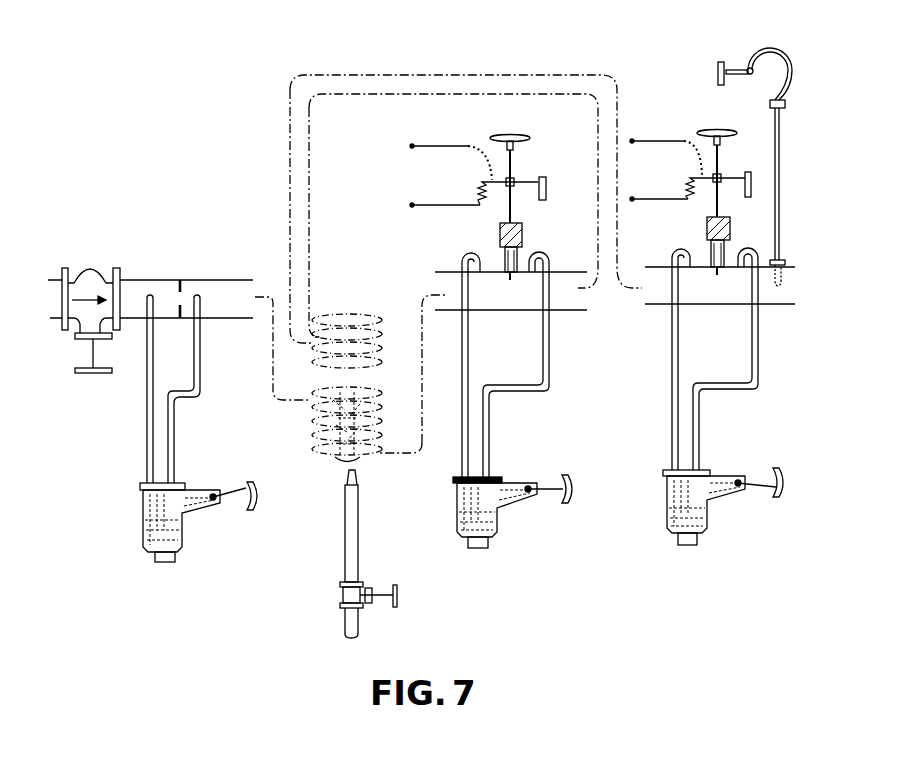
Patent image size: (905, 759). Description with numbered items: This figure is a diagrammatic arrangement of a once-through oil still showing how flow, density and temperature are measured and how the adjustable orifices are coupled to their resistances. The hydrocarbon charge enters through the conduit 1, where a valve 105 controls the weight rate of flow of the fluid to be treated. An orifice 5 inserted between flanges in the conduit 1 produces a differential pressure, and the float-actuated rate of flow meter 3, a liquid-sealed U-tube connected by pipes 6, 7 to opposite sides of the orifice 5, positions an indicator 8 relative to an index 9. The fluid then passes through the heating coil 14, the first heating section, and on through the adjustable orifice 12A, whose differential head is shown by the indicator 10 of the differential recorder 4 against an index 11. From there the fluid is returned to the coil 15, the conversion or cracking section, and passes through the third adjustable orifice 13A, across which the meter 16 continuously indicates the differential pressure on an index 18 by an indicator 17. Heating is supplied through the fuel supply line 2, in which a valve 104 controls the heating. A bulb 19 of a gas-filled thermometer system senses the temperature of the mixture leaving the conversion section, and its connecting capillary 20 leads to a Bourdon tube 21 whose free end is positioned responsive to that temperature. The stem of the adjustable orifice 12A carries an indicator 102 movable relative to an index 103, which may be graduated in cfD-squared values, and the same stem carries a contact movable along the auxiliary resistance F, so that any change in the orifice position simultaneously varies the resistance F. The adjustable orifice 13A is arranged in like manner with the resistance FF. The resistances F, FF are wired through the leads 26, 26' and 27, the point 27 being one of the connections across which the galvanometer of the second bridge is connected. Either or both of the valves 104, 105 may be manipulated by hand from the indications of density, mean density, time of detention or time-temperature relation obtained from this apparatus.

The conduit 1 is at (237, 318).
The fuel supply line 2 is at (358, 541).
The rate of flow meter 3 is at (143, 520).
The differential recorder 4 is at (458, 505).
The orifice 5 is at (178, 314).
The pipe 6 is at (147, 440).
The pipe 7 is at (174, 440).
The indicator 8 is at (238, 490).
The index 9 is at (258, 498).
The indicator 10 is at (548, 487).
The index 11 is at (579, 492).
The adjustable orifice 12A is at (510, 278).
The adjustable orifice 13A is at (717, 274).
The heating coil 14 is at (364, 424).
The coil 15 is at (364, 341).
The meter 16 is at (668, 506).
The indicator 17 is at (757, 480).
The index 18 is at (783, 487).
The bulb 19 is at (728, 285).
The connecting capillary 20 is at (779, 175).
The Bourdon tube 21 is at (769, 52).
The lead wire 26 is at (445, 216).
The lead wire 26' is at (659, 210).
The bridge point 27 is at (556, 149).
The indicator 102 is at (527, 182).
The index 103 is at (547, 188).
The valve 104 is at (398, 594).
The valve 105 is at (90, 375).
The auxiliary resistance F is at (475, 192).
The resistance FF is at (678, 186).